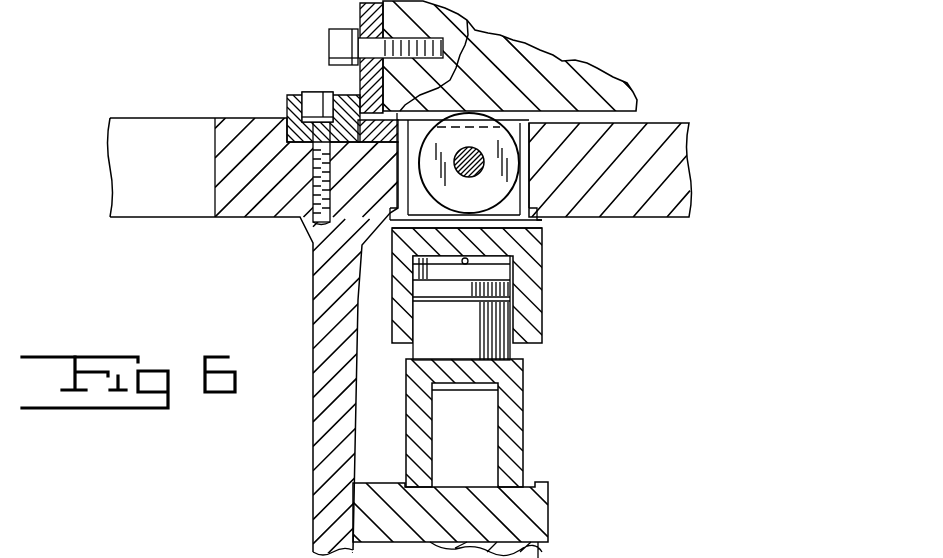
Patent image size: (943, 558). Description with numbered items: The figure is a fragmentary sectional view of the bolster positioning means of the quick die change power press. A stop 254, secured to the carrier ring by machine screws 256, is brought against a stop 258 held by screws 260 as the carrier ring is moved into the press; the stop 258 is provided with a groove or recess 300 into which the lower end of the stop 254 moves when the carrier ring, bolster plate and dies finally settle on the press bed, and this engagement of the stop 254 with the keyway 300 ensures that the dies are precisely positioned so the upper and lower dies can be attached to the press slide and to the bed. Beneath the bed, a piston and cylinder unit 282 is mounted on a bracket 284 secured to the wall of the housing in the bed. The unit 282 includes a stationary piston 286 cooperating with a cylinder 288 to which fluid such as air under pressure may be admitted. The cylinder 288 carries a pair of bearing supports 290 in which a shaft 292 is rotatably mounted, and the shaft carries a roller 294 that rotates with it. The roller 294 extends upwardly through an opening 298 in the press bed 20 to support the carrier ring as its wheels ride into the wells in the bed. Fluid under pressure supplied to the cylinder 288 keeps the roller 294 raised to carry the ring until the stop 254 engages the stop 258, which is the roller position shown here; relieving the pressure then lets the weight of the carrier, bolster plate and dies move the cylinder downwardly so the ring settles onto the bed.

The plate 20 is at (648, 205).
The stop 254 is at (370, 88).
The machine screws 256 is at (338, 40).
The stop 258 is at (287, 97).
The screws 260 is at (316, 90).
The piston and cylinder unit 282 is at (553, 368).
The bracket 284 is at (533, 518).
The stationary piston 286 is at (513, 310).
The cylinder 288 is at (530, 255).
The bearing support 290 is at (522, 190).
The shaft 292 is at (479, 147).
The roller 294 is at (415, 222).
The opening 298 is at (531, 110).
The groove or recess 300 is at (356, 143).